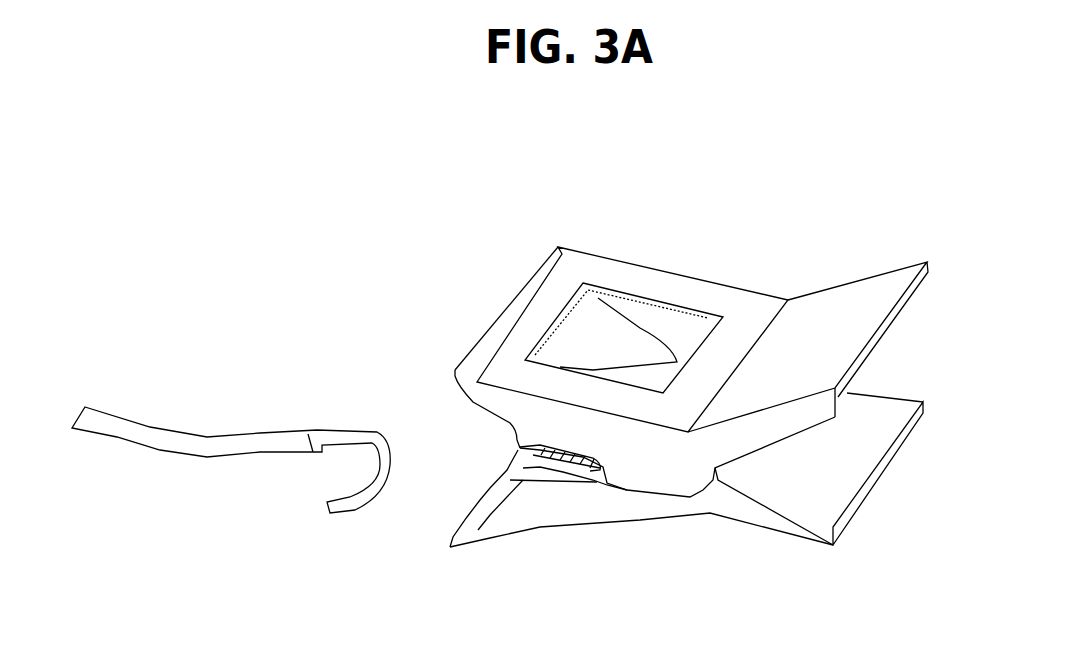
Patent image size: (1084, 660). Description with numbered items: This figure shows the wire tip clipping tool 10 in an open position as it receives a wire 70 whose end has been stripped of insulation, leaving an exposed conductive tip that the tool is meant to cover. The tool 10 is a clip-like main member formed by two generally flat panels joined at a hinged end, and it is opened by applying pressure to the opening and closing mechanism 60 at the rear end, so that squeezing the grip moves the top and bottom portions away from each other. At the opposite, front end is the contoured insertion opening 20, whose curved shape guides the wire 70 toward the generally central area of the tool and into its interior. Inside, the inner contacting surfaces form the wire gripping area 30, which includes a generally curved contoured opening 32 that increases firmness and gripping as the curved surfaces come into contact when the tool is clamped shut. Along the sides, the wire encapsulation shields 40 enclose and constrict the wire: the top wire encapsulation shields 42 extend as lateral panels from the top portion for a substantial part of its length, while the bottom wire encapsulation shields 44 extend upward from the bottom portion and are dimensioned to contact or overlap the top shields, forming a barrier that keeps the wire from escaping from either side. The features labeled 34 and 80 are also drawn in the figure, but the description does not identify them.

The wire tip clipping tool 10 is at (657, 172).
The contoured insertion opening 20 is at (499, 304).
The wire gripping area 30 is at (521, 474).
The contoured opening 32 is at (534, 460).
The tongue portion 34 is at (477, 503).
The wire encapsulation shields 40 is at (627, 494).
The top wire encapsulation shields 42 is at (511, 429).
The bottom wire encapsulation shields 44 is at (562, 500).
The opening and closing mechanism 60 is at (889, 264).
The wire 70 is at (248, 427).
The opening 80 is at (658, 296).